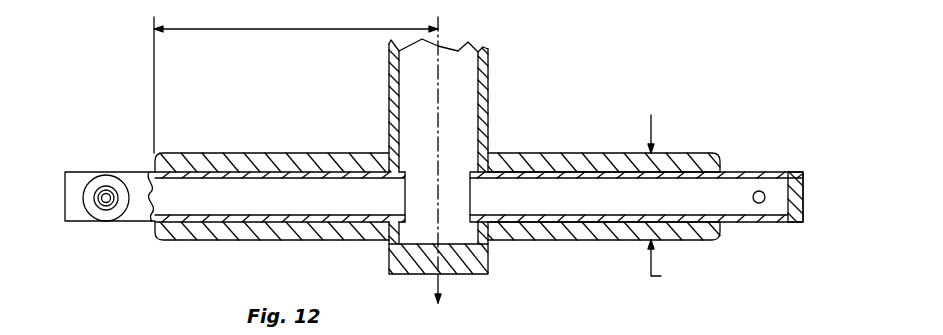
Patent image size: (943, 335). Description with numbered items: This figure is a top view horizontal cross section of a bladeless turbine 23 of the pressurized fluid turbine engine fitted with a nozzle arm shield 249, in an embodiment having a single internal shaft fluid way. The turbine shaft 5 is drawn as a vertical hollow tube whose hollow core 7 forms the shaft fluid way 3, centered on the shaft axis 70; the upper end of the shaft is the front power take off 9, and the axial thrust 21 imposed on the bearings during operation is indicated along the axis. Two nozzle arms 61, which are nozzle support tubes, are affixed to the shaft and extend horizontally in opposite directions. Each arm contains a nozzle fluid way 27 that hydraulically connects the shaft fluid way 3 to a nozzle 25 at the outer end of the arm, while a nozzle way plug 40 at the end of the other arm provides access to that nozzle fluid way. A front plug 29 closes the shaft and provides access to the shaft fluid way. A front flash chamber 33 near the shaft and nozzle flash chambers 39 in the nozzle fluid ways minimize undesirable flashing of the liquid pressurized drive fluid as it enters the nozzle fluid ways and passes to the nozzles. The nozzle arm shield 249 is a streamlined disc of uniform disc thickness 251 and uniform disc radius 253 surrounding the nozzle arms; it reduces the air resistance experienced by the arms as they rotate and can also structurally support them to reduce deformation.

The nozzle flash chamber 39 is at (72, 187).
The nozzle 25 is at (107, 173).
The nozzle arm 61 is at (205, 160).
The bladeless turbine 23 is at (276, 170).
The nozzle fluid way 27 is at (207, 205).
The nozzle arm shield 249 is at (295, 235).
The front flash chamber 33 is at (463, 220).
The front power take off 9 is at (389, 117).
The turbine shaft 5 is at (487, 100).
The shaft axis 70 is at (440, 34).
The shaft fluid way 3 is at (413, 63).
The hollow core 7 is at (458, 103).
The front plug 29 is at (422, 276).
The axial thrust 21 is at (441, 290).
The disc thickness 251 is at (680, 200).
The disc radius 253 is at (218, 29).
The nozzle way plug 40 is at (803, 200).